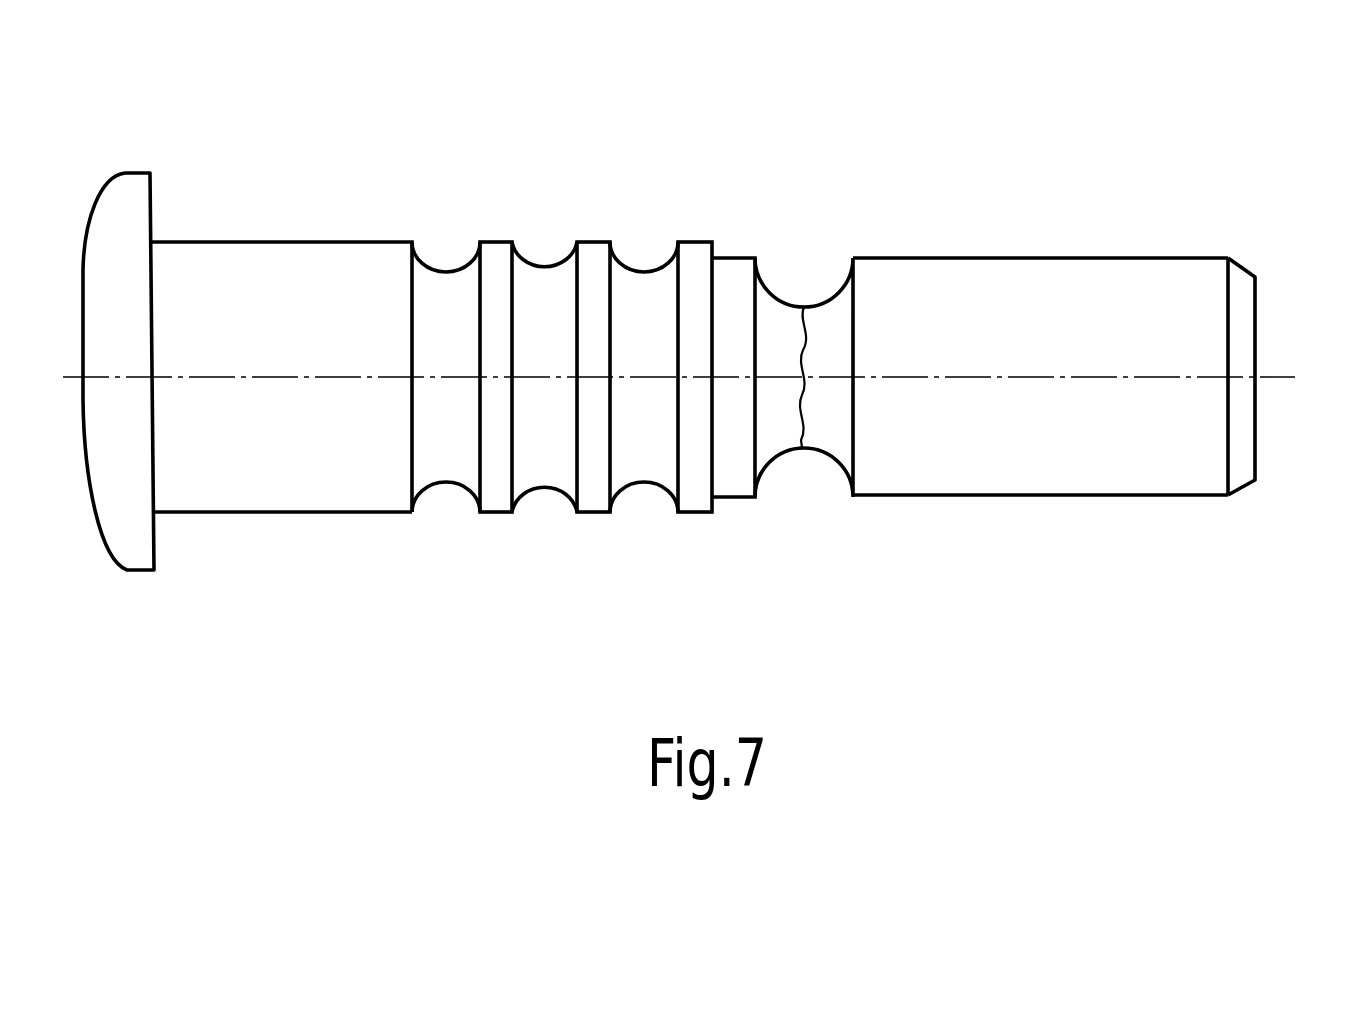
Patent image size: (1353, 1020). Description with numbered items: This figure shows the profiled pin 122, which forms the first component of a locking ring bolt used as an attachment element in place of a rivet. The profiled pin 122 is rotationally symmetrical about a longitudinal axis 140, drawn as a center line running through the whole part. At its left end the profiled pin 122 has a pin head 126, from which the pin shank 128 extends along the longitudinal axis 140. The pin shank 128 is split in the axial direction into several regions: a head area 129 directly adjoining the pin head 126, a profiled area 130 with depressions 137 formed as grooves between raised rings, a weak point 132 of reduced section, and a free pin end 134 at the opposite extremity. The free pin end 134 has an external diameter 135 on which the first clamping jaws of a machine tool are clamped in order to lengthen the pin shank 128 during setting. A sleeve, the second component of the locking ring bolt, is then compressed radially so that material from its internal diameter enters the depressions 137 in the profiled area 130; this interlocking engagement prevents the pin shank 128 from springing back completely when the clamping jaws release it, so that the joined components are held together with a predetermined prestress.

The profiled pin 122 is at (1067, 258).
The pin head 126 is at (118, 527).
The pin shank 128 is at (299, 268).
The head area 129 is at (273, 498).
The profiled area 130 is at (590, 257).
The weak point 132 is at (818, 307).
The free pin end 134 is at (1170, 285).
The external diameter 135 is at (1052, 495).
The depressions 137 is at (548, 267).
The longitudinal axis 140 is at (1272, 377).